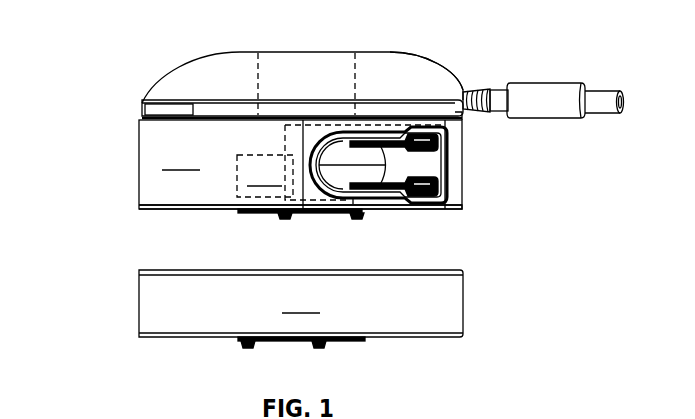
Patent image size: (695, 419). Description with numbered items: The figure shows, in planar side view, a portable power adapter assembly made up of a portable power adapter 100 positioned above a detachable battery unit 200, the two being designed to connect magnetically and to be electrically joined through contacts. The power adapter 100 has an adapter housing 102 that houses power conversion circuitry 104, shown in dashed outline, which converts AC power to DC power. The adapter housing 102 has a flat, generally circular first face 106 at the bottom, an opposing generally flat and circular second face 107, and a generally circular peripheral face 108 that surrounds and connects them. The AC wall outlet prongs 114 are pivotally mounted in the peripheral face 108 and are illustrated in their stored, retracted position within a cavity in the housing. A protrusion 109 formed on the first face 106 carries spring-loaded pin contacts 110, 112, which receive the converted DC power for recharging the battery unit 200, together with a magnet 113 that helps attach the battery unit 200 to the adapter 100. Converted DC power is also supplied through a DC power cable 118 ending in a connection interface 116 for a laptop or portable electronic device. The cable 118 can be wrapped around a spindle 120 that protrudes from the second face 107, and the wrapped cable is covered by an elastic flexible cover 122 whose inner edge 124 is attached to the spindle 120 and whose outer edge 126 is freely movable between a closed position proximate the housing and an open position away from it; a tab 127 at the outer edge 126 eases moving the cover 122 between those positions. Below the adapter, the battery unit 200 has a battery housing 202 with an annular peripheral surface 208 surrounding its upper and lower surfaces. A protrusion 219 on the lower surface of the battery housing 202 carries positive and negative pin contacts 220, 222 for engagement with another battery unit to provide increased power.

The portable power adapter 100 is at (343, 135).
The adapter housing 102 is at (463, 147).
The power conversion circuitry 104 is at (339, 164).
The first face 106 is at (452, 211).
The second face 107 is at (466, 113).
The peripheral face 108 is at (221, 163).
The protrusion 109 is at (237, 213).
The pin contact 110 is at (283, 219).
The pin contact 112 is at (357, 219).
The magnet 113 is at (315, 215).
The AC wall outlet prongs 114 is at (428, 140).
The connection interface 116 is at (602, 90).
The DC power cable 118 is at (471, 88).
The spindle 120 is at (325, 52).
The flexible cover 122 is at (412, 58).
The inner edge 124 is at (254, 52).
The outer edge 126 is at (142, 103).
The tab 127 is at (158, 108).
The detachable battery unit 200 is at (309, 331).
The battery housing 202 is at (463, 293).
The annular peripheral surface 208 is at (301, 304).
The protrusion 219 is at (365, 339).
The pin contact 220 is at (319, 348).
The pin contact 222 is at (247, 348).